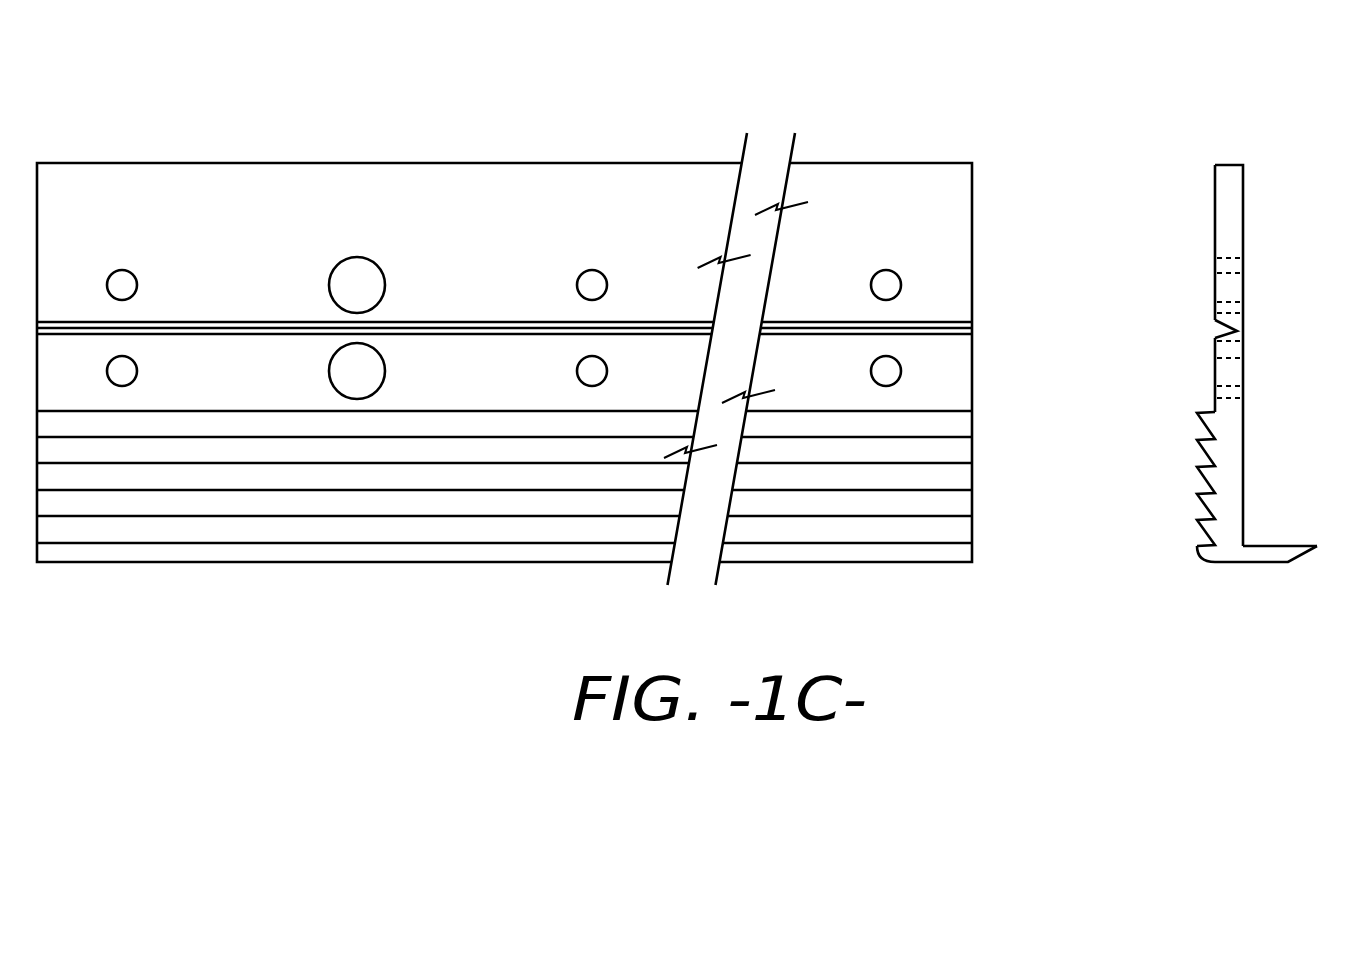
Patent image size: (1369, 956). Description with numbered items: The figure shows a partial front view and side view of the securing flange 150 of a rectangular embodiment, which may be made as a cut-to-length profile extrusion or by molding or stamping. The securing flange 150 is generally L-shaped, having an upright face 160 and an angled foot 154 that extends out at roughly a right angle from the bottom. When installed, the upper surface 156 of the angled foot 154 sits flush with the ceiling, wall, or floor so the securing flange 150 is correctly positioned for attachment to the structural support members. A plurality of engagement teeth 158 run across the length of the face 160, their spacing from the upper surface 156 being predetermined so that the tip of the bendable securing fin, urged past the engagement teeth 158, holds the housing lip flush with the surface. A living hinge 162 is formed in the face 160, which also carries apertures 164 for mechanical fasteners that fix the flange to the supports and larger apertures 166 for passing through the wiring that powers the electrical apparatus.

The securing flange 150 is at (447, 99).
The angled foot 154 is at (1275, 562).
The upper surface of the angled foot 156 is at (1267, 546).
The engagement teeth 158 is at (1202, 450).
The securing flange face 160 is at (1215, 212).
The living hinge 162 is at (1222, 330).
The apertures 164 is at (900, 377).
The apertures 166 is at (357, 257).